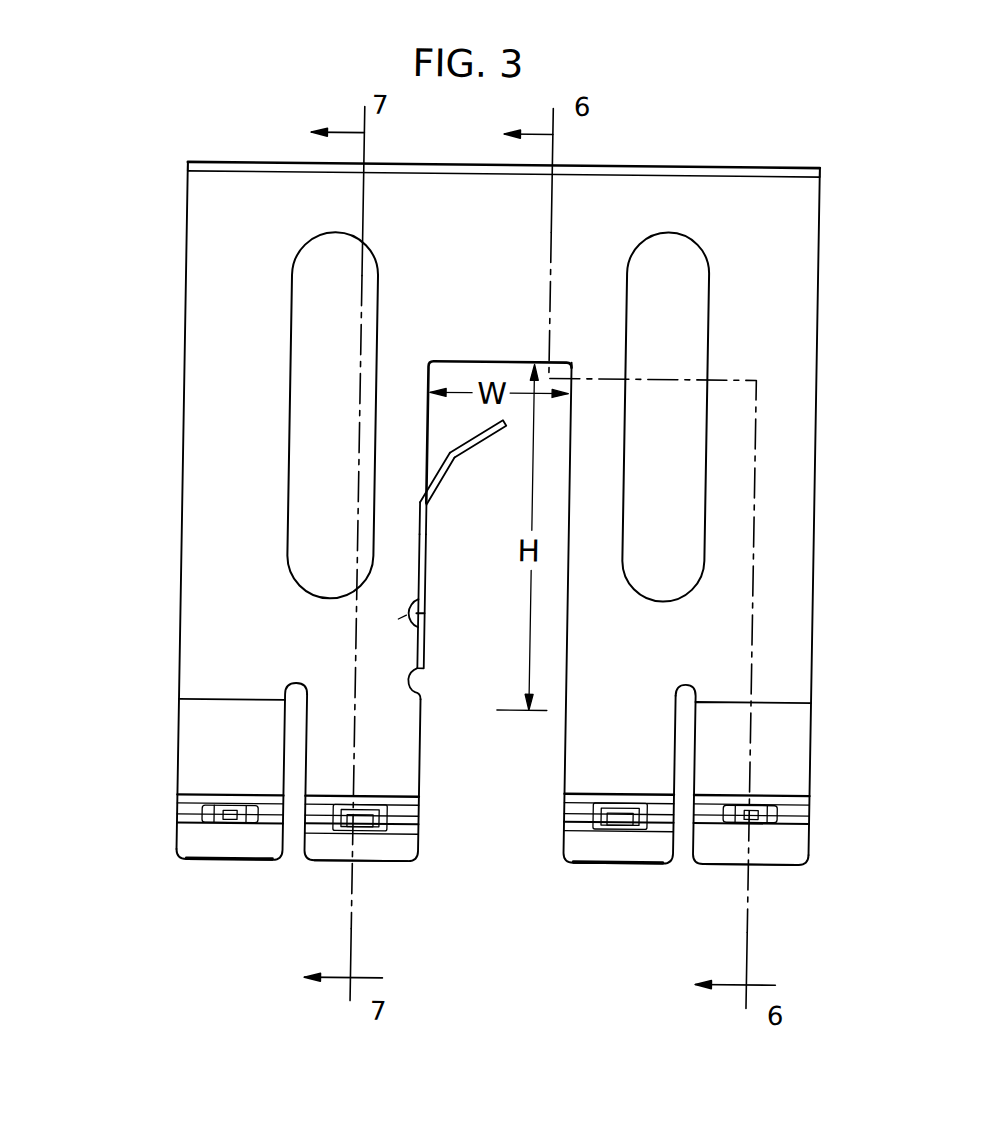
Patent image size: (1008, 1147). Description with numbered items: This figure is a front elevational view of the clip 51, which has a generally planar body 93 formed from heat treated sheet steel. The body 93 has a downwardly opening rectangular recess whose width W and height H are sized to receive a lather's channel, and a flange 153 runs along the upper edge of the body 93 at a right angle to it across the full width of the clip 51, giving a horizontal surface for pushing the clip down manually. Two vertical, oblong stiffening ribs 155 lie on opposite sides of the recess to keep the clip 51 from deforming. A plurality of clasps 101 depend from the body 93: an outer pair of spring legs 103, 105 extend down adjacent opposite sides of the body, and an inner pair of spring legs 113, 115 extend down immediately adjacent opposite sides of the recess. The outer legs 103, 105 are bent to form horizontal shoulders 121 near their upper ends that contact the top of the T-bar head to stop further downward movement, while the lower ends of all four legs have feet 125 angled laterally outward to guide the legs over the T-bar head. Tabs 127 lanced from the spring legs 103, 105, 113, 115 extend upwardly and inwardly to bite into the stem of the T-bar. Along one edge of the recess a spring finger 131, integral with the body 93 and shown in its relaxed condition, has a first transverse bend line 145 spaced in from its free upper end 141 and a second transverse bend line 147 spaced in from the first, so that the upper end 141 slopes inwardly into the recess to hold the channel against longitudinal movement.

The clip 51 is at (182, 491).
The body 93 is at (778, 347).
The clasps 101 is at (266, 880).
The outer spring leg 103 is at (190, 743).
The outer spring leg 105 is at (794, 749).
The inner spring leg 113 is at (404, 732).
The inner spring leg 115 is at (582, 761).
The horizontal shoulders 121 is at (198, 703).
The feet 125 is at (190, 849).
The tabs 127 is at (225, 820).
The spring finger 131 is at (426, 569).
The free upper end 141 is at (506, 425).
The first transverse bend line 145 is at (454, 460).
The second transverse bend line 147 is at (430, 508).
The flange 153 is at (752, 162).
The stiffening ribs 155 is at (320, 416).